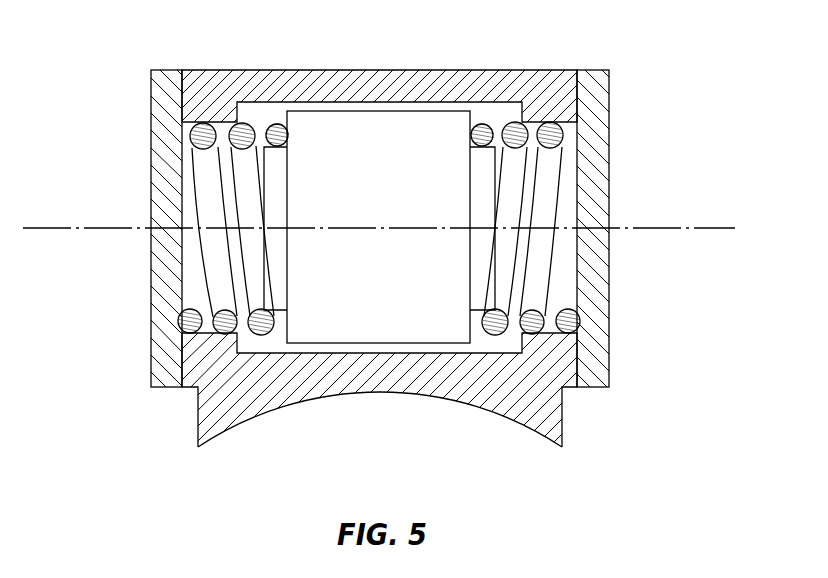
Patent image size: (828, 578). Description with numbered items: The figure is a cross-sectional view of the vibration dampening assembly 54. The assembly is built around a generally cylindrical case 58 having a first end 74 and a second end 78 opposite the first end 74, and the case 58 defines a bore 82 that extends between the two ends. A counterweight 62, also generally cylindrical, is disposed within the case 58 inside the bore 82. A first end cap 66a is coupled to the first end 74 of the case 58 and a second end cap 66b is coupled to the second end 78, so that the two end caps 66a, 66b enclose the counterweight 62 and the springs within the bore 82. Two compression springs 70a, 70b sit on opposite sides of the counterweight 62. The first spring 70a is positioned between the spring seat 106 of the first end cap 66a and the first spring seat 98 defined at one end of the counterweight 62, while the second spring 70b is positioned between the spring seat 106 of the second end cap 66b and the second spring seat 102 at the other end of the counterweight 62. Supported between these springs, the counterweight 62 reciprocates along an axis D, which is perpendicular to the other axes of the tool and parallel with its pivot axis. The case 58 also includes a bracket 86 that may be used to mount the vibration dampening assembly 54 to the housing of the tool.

The vibration dampening assembly 54 is at (57, 363).
The case 58 is at (422, 75).
The counterweight 62 is at (322, 325).
The first end cap 66a is at (160, 163).
The second end cap 66b is at (600, 150).
The first compression spring 70a is at (245, 123).
The second compression spring 70b is at (505, 132).
The first end 74 is at (130, 52).
The second end 78 is at (630, 48).
The bore 82 is at (407, 350).
The bracket 86 is at (230, 417).
The first spring seat 98 is at (278, 122).
The second spring seat 102 is at (492, 313).
The spring seat 106 is at (219, 133).
The axis D is at (705, 228).